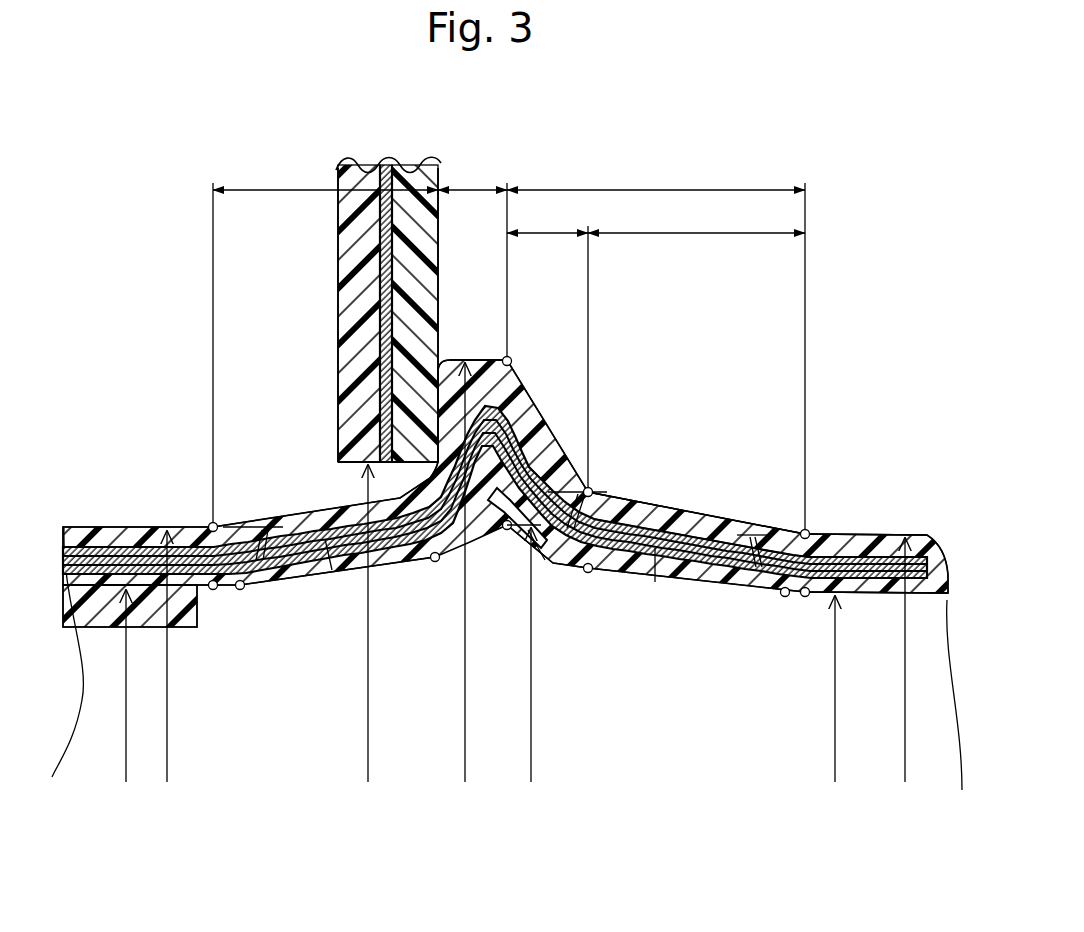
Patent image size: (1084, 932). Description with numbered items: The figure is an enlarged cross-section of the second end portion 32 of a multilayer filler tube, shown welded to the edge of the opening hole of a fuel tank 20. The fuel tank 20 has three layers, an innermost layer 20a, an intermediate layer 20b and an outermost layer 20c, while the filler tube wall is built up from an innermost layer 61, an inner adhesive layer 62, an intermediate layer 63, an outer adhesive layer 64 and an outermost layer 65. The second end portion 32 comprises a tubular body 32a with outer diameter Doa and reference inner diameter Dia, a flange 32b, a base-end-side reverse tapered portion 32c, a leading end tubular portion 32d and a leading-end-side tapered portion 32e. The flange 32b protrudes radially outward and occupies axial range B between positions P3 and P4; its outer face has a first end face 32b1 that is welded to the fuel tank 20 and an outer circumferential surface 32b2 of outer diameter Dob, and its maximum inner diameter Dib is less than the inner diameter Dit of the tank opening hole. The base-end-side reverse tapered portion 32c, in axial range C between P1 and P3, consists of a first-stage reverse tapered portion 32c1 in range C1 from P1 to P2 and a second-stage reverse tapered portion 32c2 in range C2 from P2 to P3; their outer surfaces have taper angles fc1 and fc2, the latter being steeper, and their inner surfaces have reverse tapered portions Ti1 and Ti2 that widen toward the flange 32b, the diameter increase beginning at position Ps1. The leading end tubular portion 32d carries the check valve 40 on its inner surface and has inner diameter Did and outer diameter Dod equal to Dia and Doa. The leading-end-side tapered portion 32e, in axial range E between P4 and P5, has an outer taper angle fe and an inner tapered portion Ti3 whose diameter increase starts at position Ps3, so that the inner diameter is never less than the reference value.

The fuel tank 20 is at (346, 309).
The innermost layer 20a is at (362, 298).
The intermediate layer 20b is at (385, 338).
The outermost layer 20c is at (405, 368).
The second end portion 32 is at (824, 381).
The tubular body 32a is at (923, 529).
The flange 32b is at (499, 355).
The first end face 32b1 is at (436, 398).
The outer circumferential surface 32b2 is at (470, 357).
The base-end-side reverse tapered portion 32c is at (623, 488).
The first-stage reverse tapered portion 32c1 is at (669, 502).
The second-stage reverse tapered portion 32c2 is at (537, 392).
The leading end tubular portion 32d is at (135, 524).
The leading-end-side tapered portion 32e is at (320, 497).
The check valve 40 is at (95, 590).
The innermost layer 61 is at (890, 580).
The inner adhesive layer 62 is at (870, 572).
The intermediate layer 63 is at (857, 564).
The outer adhesive layer 64 is at (840, 556).
The outermost layer 65 is at (820, 540).
The position P1 is at (805, 597).
The position P2 is at (589, 573).
The position P3 is at (507, 530).
The position P4 is at (434, 562).
The position P5 is at (214, 590).
The diameter increase start position Ps1 is at (785, 597).
The diameter increase start position Ps3 is at (241, 590).
The reverse tapered portion Ti1 is at (655, 582).
The reverse tapered portion Ti2 is at (545, 560).
The tapered portion Ti3 is at (332, 570).
The taper angle fe is at (267, 525).
The taper angle fc1 is at (752, 531).
The taper angle fc2 is at (580, 489).
The axial range E is at (325, 348).
The axial range B is at (472, 257).
The axial range C is at (656, 345).
The axial range C1 is at (696, 218).
The axial range C2 is at (547, 346).
The inner diameter Did is at (113, 686).
The outer diameter Dod is at (154, 656).
The inner diameter Dit is at (354, 623).
The outer diameter Dob is at (451, 572).
The maximum inner diameter Dib is at (522, 653).
The inner diameter Dia is at (821, 689).
The outer diameter Doa is at (891, 660).